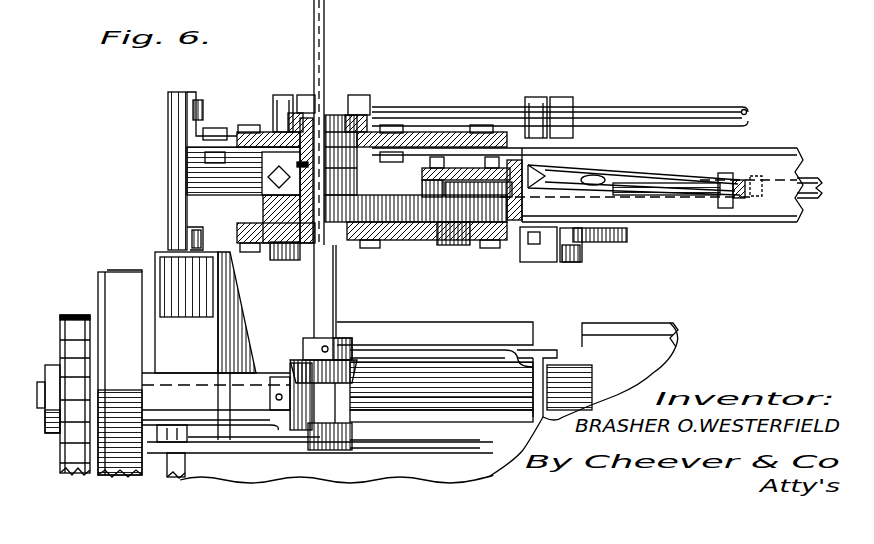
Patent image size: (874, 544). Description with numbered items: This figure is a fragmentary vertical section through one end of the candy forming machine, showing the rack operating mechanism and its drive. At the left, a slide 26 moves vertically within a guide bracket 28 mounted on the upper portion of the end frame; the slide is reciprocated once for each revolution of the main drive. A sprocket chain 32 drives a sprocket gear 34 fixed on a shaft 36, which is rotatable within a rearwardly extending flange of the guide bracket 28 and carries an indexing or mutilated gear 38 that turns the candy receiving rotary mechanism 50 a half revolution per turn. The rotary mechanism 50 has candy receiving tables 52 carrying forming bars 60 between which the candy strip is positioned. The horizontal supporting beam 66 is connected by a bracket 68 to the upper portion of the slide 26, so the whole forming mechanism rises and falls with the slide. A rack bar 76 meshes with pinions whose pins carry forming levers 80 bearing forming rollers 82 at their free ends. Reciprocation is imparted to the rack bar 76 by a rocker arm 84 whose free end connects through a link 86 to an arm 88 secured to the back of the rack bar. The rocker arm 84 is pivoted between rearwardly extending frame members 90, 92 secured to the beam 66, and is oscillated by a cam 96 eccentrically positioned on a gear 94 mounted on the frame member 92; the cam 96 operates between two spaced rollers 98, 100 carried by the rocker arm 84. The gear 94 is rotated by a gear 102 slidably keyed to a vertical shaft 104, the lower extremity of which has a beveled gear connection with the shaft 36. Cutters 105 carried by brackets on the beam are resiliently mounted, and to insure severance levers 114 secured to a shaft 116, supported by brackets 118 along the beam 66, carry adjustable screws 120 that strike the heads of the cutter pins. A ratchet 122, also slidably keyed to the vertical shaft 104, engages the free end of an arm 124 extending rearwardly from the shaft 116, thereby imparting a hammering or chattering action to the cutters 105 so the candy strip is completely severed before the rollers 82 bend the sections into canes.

The slide 26 is at (172, 166).
The guide bracket 28 is at (240, 331).
The sprocket chain 32 is at (63, 440).
The sprocket gear 34 is at (72, 315).
The shaft 36 is at (40, 384).
The indexing or mutilated gear 38 is at (123, 277).
The candy receiving rotary mechanism 50 is at (490, 393).
The candy receiving table 52 is at (663, 372).
The forming bar 60 is at (570, 325).
The horizontal supporting beam 66 is at (797, 158).
The bracket 68 is at (218, 86).
The rack bar 76 is at (808, 198).
The forming lever or arm 80 is at (660, 250).
The forming roller 82 is at (573, 263).
The rocker arm 84 is at (460, 168).
The link 86 is at (668, 192).
The arm 88 is at (735, 181).
The frame member 90 is at (445, 133).
The frame member 92 is at (418, 235).
The gear 94 is at (467, 210).
The cam 96 is at (460, 192).
The roller 98 is at (422, 185).
The roller 100 is at (529, 189).
The gear 102 is at (370, 212).
The vertical shaft 104 is at (337, 311).
The cutter 105 is at (545, 254).
The lever 114 is at (283, 101).
The shaft 116 is at (307, 96).
The bracket 118 is at (567, 104).
The adjustable screw 120 is at (570, 148).
The ratchet 122 is at (343, 112).
The arm 124 is at (366, 103).